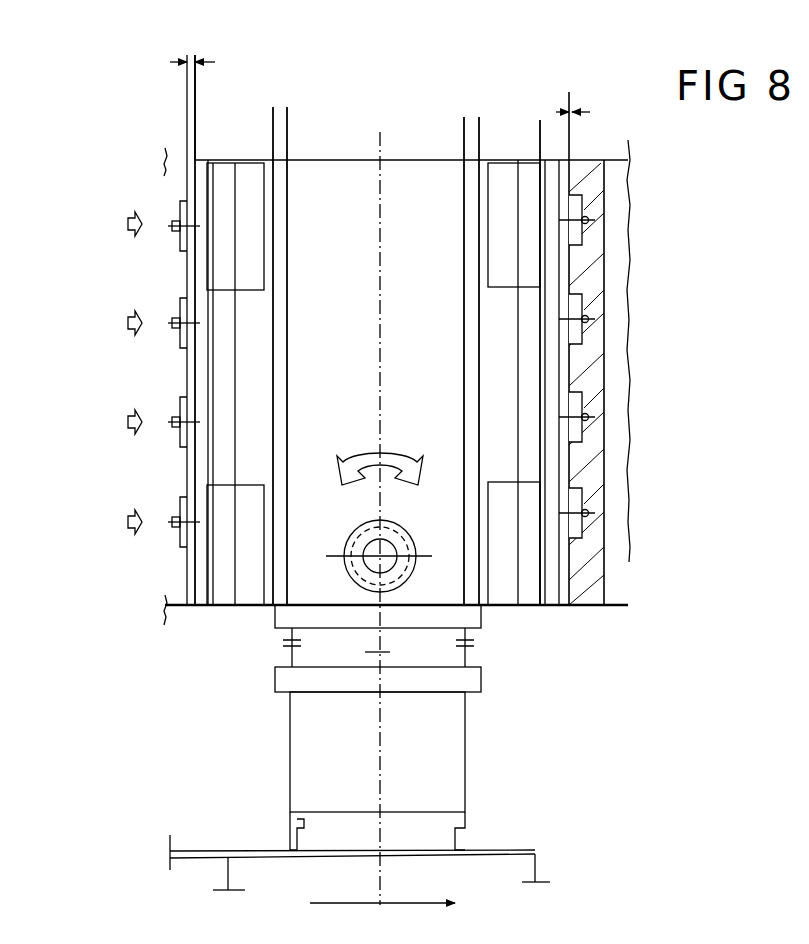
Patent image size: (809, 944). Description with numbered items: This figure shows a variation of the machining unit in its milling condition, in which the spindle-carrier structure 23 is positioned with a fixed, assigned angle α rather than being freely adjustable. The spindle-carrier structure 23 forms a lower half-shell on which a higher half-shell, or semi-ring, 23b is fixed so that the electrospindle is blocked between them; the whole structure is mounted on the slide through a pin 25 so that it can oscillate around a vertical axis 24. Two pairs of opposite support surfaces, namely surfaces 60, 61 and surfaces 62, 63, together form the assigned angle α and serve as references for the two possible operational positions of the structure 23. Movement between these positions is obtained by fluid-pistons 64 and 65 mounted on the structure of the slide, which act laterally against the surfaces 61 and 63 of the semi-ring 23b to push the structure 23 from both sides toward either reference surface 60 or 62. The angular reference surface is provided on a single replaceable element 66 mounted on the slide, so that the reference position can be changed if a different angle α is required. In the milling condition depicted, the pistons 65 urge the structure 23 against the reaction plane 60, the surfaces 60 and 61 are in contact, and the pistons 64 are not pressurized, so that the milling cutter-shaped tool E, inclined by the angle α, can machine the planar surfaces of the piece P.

The spindle-carrier structure 23 is at (618, 468).
The half-shell 23b is at (500, 193).
The vertical axis 24 is at (395, 542).
The pin 25 is at (352, 577).
The support surface 60 is at (587, 98).
The support surface 61 is at (565, 112).
The support surface 62 is at (186, 116).
The support surface 63 is at (197, 111).
The fluid-piston 64 is at (586, 240).
The fluid-piston 65 is at (184, 242).
The replaceable element 66 is at (594, 366).
The milling cutter-shaped tool E is at (430, 831).
The piece P is at (512, 866).